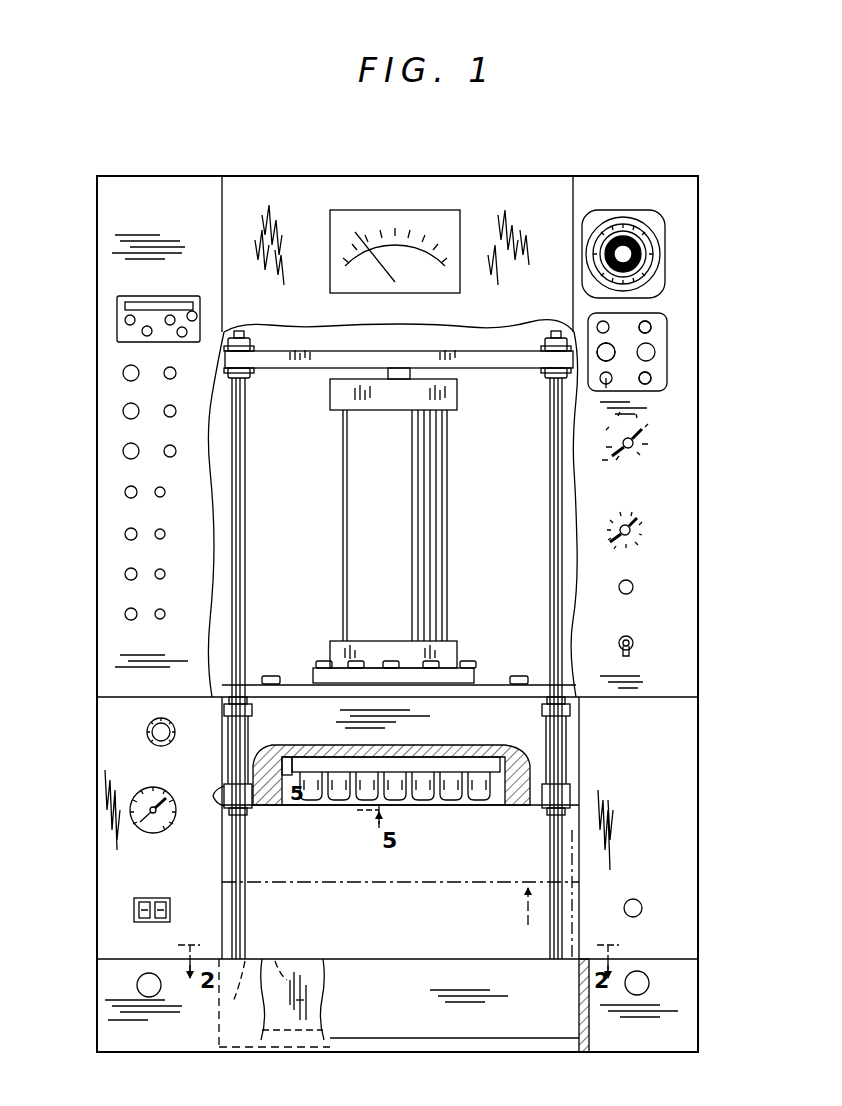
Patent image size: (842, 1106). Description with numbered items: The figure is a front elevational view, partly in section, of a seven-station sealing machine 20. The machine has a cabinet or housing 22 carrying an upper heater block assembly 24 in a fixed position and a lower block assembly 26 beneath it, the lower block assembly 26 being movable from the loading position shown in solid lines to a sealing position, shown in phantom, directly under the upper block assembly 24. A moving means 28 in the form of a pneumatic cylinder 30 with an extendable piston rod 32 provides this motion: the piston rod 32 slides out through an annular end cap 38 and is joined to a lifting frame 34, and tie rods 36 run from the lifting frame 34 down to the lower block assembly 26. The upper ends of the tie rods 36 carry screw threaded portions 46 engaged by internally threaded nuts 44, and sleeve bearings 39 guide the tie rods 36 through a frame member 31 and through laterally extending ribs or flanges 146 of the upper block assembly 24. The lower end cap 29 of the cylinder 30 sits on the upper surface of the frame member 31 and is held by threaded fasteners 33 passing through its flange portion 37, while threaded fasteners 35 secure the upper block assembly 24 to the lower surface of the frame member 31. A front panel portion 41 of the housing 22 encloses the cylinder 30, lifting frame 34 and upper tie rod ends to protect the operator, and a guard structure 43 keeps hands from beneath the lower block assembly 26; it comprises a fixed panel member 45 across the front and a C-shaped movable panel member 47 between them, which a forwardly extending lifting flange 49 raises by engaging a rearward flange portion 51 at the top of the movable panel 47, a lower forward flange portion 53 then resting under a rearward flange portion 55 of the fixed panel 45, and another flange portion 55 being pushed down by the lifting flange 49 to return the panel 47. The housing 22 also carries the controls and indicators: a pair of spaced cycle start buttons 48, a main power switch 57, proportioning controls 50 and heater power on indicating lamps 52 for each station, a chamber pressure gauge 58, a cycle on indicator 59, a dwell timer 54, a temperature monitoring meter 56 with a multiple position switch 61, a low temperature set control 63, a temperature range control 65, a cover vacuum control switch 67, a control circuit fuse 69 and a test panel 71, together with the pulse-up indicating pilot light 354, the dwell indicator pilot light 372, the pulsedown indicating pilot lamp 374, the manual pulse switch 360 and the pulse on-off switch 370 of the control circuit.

The sealing machine 20 is at (722, 498).
The housing 22 is at (690, 678).
The upper heater block assembly 24 is at (400, 758).
The lower block assembly 26 is at (579, 868).
The press unit 28 is at (462, 432).
The lower end cap 29 is at (460, 650).
The pneumatic cylinder 30 is at (447, 572).
The frame member 31 is at (532, 684).
The piston rod 32 is at (402, 372).
The threaded fasteners 33 is at (324, 662).
The lifting frame 34 is at (296, 368).
The threaded fasteners 35 is at (273, 674).
The tie rods 36 is at (245, 497).
The flange portion 37 is at (476, 676).
The annular end cap 38 is at (330, 400).
The sleeve bearings 39 is at (252, 702).
The front panel portion 41 is at (392, 496).
The guard structure 43 is at (303, 958).
The internally threaded nuts 44 is at (254, 348).
The fixed panel member 45 is at (258, 1053).
The screw threaded portions 46 is at (238, 331).
The movable panel member 47 is at (574, 922).
The cycle start buttons 48 is at (137, 985).
The lifting flange 49 is at (482, 1028).
The proportioning controls 50 is at (122, 452).
The flange portion 51 is at (307, 996).
The heater power on indicating lamps 52 is at (174, 379).
The flange portion 53 is at (300, 1053).
The dwell timer 54 is at (630, 228).
The flange portion 55 is at (273, 998).
The temperature monitoring meter 56 is at (444, 216).
The main power switch 57 is at (170, 916).
The chamber pressure gauge 58 is at (153, 834).
The cycle on indicator 59 is at (147, 733).
The multiple position switch 61 is at (655, 444).
The low temperature set control 63 is at (650, 522).
The temperature range control 65 is at (634, 587).
The cover vacuum control switch 67 is at (634, 646).
The control circuit fuse 69 is at (641, 912).
The test panel 71 is at (150, 297).
The ribs or flanges 146 is at (224, 708).
The pulse-up indicating pilot light 354 is at (597, 325).
The manual pulse switch 360 is at (652, 378).
The pulse on-off switch 370 is at (600, 380).
The dwell indicator pilot light 372 is at (598, 348).
The pulsedown indicating pilot lamp 374 is at (652, 326).